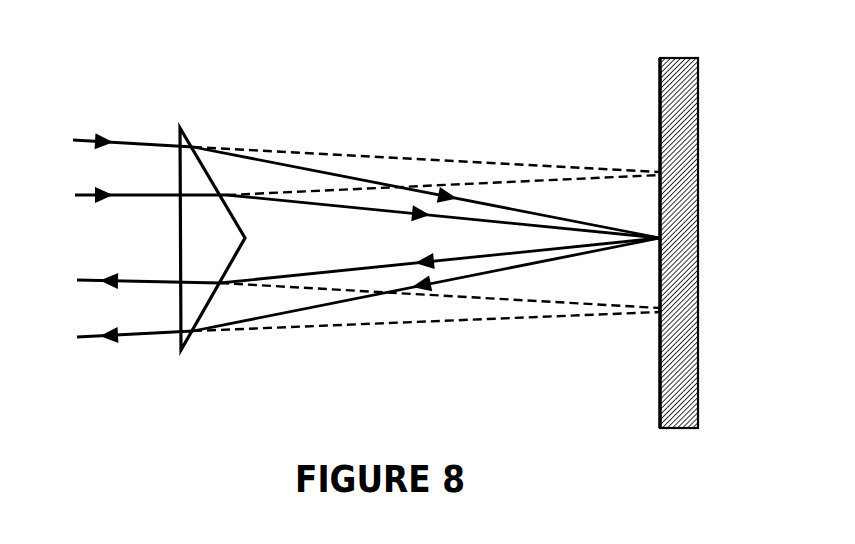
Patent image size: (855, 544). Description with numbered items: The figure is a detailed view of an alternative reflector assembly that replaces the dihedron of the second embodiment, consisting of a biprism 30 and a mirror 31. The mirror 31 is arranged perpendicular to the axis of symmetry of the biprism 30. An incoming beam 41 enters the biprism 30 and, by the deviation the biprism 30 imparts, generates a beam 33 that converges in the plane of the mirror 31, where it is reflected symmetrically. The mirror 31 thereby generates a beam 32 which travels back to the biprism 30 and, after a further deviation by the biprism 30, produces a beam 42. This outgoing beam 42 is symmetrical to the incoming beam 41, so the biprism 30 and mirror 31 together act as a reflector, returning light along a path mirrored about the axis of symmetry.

The biprism 30 is at (188, 315).
The mirror 31 is at (660, 415).
The beam 32 is at (245, 312).
The beam 33 is at (247, 163).
The incoming beam 41 is at (95, 167).
The beam 42 is at (90, 312).